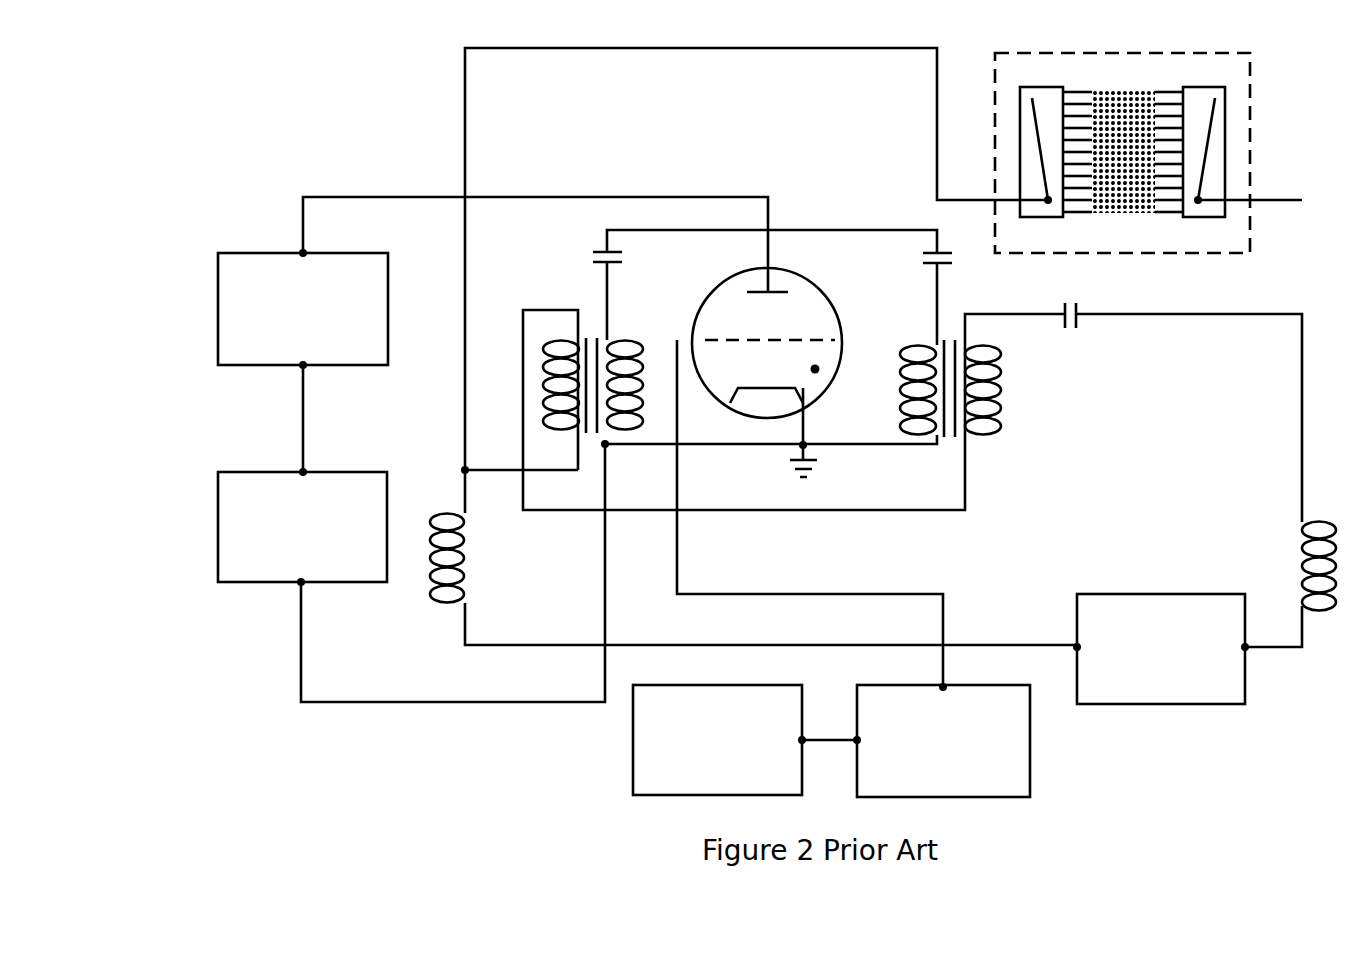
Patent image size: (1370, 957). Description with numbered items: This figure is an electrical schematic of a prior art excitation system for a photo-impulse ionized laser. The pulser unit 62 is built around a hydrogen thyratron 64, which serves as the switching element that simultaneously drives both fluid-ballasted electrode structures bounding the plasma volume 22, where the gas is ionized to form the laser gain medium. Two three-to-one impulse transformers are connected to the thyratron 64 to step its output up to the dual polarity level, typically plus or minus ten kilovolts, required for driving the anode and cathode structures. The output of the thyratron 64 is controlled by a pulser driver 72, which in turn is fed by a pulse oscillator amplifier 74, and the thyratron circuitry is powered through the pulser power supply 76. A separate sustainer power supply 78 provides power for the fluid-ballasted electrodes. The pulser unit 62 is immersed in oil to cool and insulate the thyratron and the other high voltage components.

The pulser unit 62 is at (400, 126).
The plasma volume 22 is at (1125, 72).
The hydrogen thyratron 64 is at (706, 278).
The pulser driver 72 is at (943, 757).
The pulse oscillator amplifier 74 is at (717, 757).
The pulser power supply 76 is at (282, 527).
The power supply for the fluid-ballasted electrodes 78 is at (1161, 667).